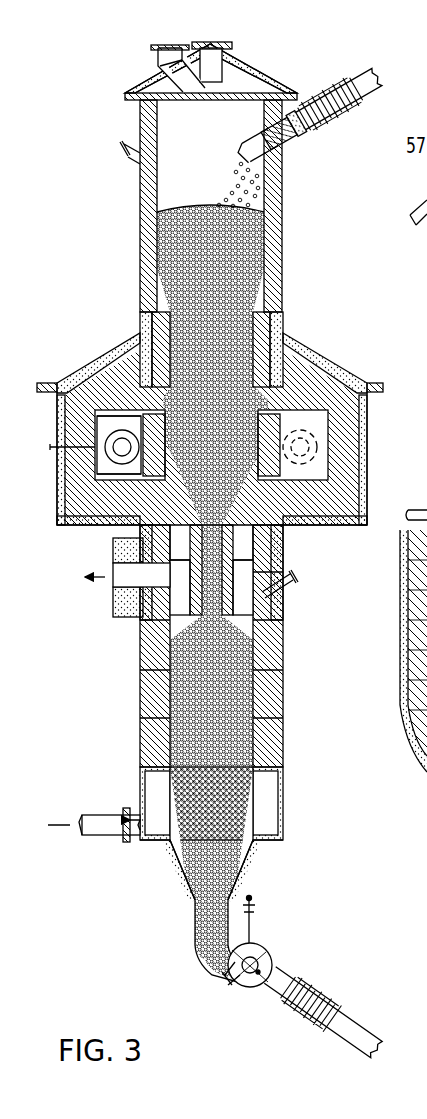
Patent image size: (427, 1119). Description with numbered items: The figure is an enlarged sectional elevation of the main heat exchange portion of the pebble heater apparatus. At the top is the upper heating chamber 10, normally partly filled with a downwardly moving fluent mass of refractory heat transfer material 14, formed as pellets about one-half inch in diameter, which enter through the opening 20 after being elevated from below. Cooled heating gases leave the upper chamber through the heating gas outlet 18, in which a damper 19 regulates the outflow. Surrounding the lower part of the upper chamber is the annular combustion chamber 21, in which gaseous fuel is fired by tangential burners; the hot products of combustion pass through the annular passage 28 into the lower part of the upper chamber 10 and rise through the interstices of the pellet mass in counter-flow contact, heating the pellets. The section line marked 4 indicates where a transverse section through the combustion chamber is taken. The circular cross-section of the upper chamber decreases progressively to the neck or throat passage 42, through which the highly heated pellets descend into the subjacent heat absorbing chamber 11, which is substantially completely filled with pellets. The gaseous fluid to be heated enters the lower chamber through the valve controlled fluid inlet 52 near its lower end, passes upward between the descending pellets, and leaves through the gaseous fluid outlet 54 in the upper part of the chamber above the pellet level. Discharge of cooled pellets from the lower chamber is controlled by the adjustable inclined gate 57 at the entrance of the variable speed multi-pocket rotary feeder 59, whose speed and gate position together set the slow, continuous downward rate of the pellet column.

The upper heating chamber 10 is at (222, 274).
The heat absorbing or reaction chamber 11 is at (222, 706).
The refractory heat transfer material 14 is at (168, 205).
The heating gas outlet 18 is at (160, 64).
The damper 19 is at (205, 60).
The opening 20 is at (312, 140).
The annular combustion chamber 21 is at (368, 478).
The annular passage 28 is at (100, 366).
The section line 4- 4 is at (38, 440).
The neck or throat passage 42 is at (224, 607).
The valve controlled fluid inlet 52 is at (110, 812).
The gaseous fluid outlet 54 is at (154, 588).
The adjustable inclined gate 57 is at (255, 945).
The multi-pocket rotary feeder 59 is at (232, 968).